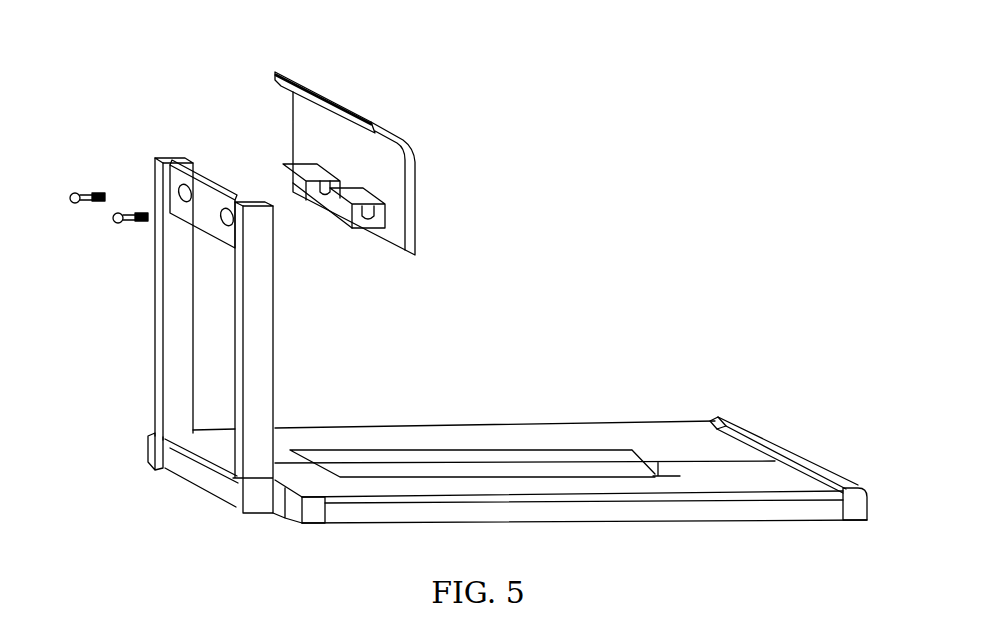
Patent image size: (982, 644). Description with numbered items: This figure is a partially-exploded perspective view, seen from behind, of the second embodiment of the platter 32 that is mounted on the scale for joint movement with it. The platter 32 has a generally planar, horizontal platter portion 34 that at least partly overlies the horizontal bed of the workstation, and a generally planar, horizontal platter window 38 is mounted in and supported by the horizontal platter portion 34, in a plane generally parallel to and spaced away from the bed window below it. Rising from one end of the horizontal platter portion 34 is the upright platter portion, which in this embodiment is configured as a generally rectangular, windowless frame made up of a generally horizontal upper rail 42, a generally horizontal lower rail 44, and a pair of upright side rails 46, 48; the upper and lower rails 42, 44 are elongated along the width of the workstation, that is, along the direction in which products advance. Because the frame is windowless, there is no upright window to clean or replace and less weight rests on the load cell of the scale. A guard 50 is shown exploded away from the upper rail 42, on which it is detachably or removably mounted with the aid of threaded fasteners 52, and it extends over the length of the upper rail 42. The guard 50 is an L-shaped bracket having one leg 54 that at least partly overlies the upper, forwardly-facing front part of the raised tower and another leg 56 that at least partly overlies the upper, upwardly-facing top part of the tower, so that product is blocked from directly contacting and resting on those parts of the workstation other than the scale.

The platter 32 is at (664, 532).
The horizontal platter portion 34 is at (767, 490).
The horizontal platter window 38 is at (505, 466).
The upper rail 42 is at (223, 179).
The lower rail 44 is at (198, 488).
The upright side rail 46 is at (263, 342).
The upright side rail 48 is at (153, 297).
The guard 50 is at (410, 129).
The threaded fastener 52 is at (84, 190).
The leg 54 is at (417, 206).
The leg 56 is at (292, 70).